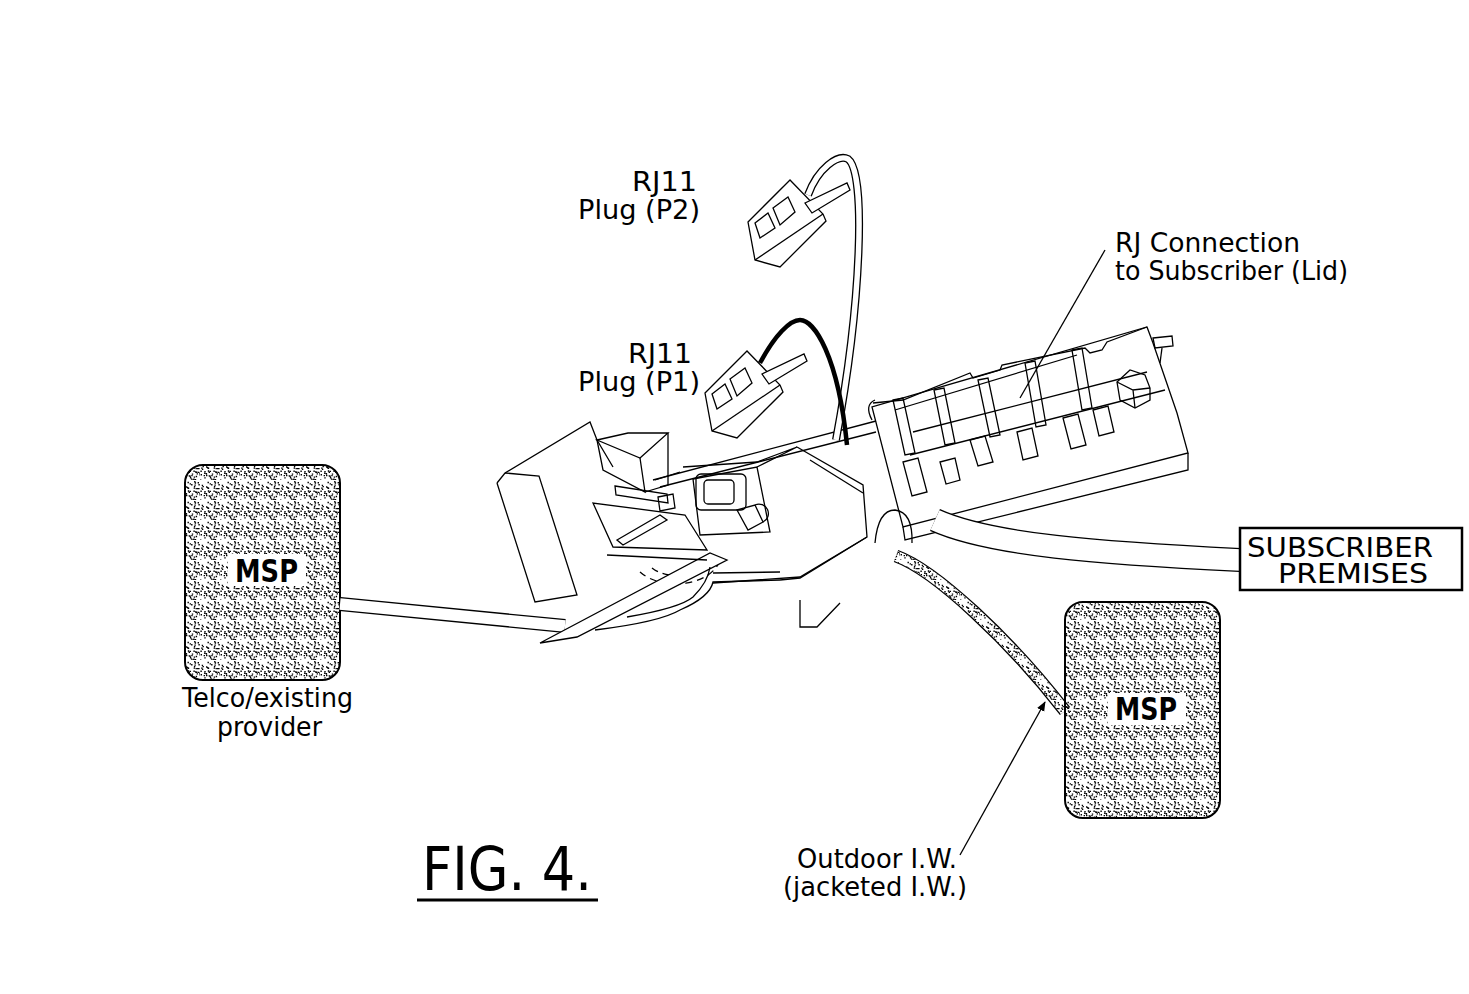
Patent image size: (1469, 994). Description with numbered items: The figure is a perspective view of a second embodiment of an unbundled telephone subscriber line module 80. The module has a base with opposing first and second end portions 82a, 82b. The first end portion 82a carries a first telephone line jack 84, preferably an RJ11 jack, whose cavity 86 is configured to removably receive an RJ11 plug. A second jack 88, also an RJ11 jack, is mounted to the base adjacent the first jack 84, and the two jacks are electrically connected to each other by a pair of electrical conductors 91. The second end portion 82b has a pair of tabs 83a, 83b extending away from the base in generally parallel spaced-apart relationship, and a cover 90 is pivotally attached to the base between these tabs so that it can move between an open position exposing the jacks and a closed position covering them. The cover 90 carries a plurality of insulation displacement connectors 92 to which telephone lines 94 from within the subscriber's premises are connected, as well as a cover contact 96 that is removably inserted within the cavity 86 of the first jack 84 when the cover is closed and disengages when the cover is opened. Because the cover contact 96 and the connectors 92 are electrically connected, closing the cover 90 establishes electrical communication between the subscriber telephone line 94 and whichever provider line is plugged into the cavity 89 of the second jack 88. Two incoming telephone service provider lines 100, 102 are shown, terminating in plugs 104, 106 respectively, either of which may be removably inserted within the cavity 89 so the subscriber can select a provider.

The telephone subscriber line module 80 is at (597, 667).
The first end portion 82a is at (560, 468).
The second end portion 82b is at (862, 575).
The tab 83a is at (770, 477).
The tab 83b is at (905, 542).
The first telephone line jack 84 is at (637, 458).
The cavity 86 is at (662, 475).
The second jack 88 is at (744, 535).
The cavity 89 is at (752, 526).
The cover 90 is at (1185, 470).
The electrical conductors 91 is at (682, 583).
The insulation displacement connectors 92 is at (1000, 396).
The telephone line 94 is at (1140, 535).
The cover contact 96 is at (1140, 388).
The incoming telephone service provider line 100 is at (862, 178).
The incoming telephone service provider line 102 is at (800, 326).
The plug 104 is at (790, 197).
The plug 106 is at (760, 352).